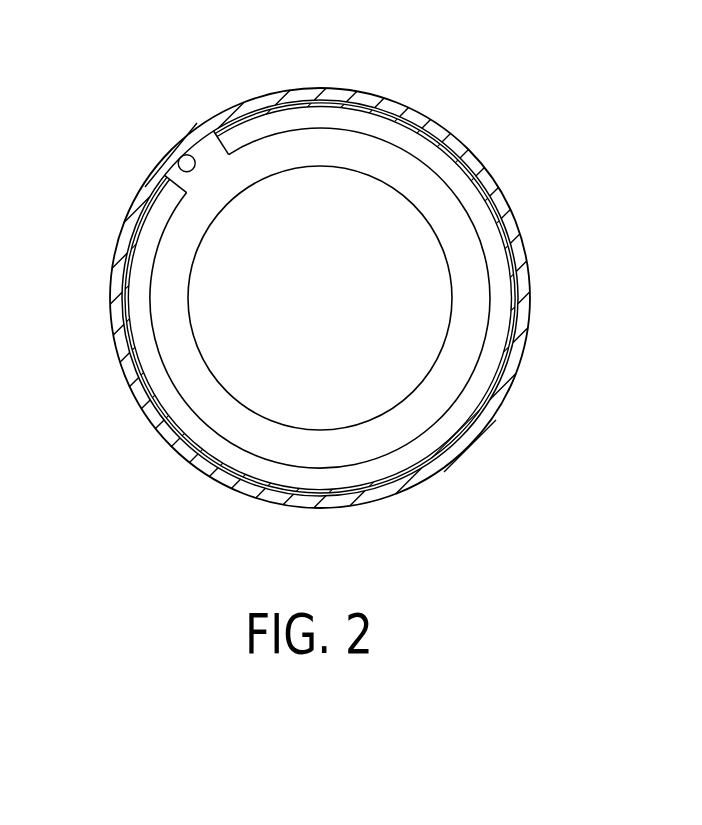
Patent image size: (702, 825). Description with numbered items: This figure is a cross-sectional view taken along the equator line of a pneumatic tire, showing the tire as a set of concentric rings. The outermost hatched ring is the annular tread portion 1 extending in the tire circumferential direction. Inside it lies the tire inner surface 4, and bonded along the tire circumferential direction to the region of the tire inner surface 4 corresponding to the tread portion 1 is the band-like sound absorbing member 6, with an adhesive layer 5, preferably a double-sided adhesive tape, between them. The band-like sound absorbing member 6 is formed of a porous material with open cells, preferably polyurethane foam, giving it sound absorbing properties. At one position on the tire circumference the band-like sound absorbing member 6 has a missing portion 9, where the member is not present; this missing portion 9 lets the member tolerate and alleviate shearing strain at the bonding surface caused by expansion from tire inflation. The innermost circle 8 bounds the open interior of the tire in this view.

The tread portion 1 is at (370, 102).
The tire inner surface 4 is at (176, 146).
The adhesive layer 5 is at (268, 100).
The band-like sound absorbing member 6 is at (322, 115).
The lumen 8 is at (413, 175).
The missing portion 9 is at (208, 163).